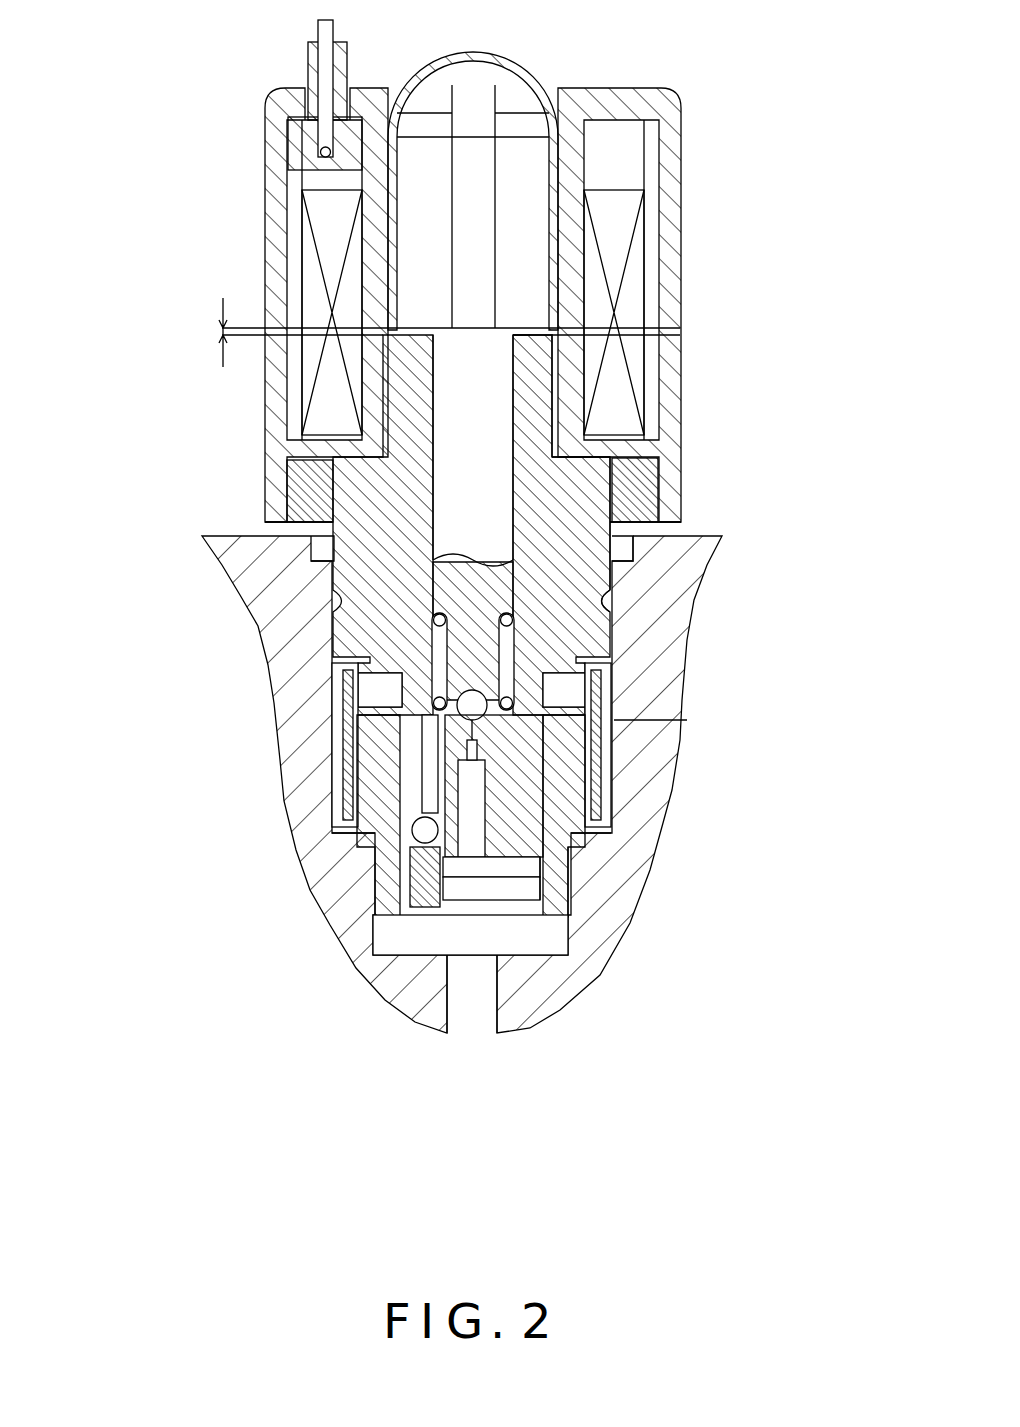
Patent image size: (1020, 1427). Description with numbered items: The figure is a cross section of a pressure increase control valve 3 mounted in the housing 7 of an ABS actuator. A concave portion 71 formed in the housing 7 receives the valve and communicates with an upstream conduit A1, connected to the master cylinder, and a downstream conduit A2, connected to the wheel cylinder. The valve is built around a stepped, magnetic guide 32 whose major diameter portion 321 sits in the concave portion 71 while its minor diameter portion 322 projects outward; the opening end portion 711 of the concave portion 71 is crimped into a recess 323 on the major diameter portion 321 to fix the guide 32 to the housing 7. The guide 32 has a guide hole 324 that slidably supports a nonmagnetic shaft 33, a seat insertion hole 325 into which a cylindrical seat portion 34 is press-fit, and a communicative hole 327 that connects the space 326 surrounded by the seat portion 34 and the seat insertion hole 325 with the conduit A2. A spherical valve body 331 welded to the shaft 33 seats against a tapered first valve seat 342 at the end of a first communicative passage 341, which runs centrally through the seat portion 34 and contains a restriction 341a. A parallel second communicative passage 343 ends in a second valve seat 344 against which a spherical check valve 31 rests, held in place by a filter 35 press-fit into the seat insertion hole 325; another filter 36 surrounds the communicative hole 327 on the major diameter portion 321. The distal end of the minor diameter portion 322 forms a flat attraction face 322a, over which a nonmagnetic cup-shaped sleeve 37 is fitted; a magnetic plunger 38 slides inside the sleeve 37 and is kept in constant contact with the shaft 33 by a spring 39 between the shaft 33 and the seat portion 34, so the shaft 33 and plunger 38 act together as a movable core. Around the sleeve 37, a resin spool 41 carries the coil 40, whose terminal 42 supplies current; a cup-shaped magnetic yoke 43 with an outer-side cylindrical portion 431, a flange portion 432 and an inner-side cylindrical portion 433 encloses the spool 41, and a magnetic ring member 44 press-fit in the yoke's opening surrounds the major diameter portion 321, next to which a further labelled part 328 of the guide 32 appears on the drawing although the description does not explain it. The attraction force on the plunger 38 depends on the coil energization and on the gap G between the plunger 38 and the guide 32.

The pressure increase control valve 3 is at (695, 128).
The housing 7 is at (266, 581).
The opening end portion 711 is at (311, 554).
The check valve 31 is at (372, 848).
The guide 32 is at (583, 497).
The major diameter portion 321 is at (585, 577).
The minor diameter portion 322 is at (530, 380).
The attraction face 322a is at (525, 328).
The recess 323 is at (600, 602).
The guide hole 324 is at (515, 417).
The seat insertion hole 325 is at (568, 850).
The space 326 is at (560, 780).
The communicative hole 327 is at (560, 672).
The flange block 328 is at (635, 470).
The shaft 33 is at (485, 522).
The valve body 331 is at (490, 698).
The seat portion 34 is at (520, 823).
The first communicative passage 341 is at (480, 868).
The restriction 341a is at (425, 722).
The first valve seat 342 is at (548, 860).
The second communicative passage 343 is at (413, 790).
The second valve seat 344 is at (412, 820).
The filter 35 is at (395, 920).
The filter 36 is at (340, 682).
The sleeve 37 is at (523, 62).
The plunger 38 is at (523, 188).
The spring 39 is at (395, 650).
The coil 40 is at (317, 290).
The spool 41 is at (290, 400).
The terminal 42 is at (318, 28).
The yoke 43 is at (265, 243).
The outer-side cylindrical portion 431 is at (277, 200).
The flange portion 432 is at (300, 83).
The inner-side cylindrical portion 433 is at (377, 135).
The ring member 44 is at (290, 497).
The concave portion 71 is at (348, 702).
The gap G is at (223, 332).
The conduit A1 is at (450, 1013).
The conduit A2 is at (660, 720).